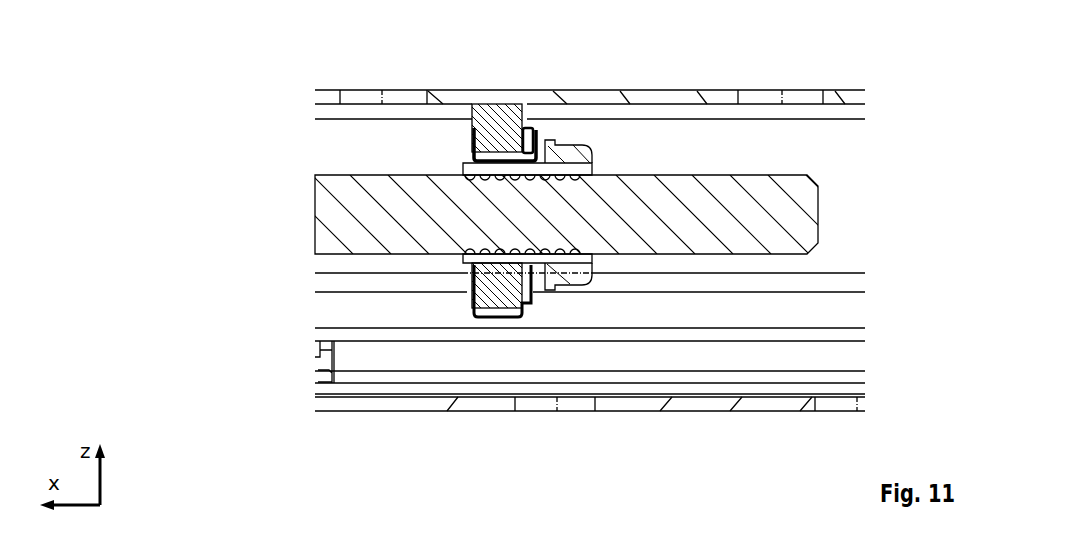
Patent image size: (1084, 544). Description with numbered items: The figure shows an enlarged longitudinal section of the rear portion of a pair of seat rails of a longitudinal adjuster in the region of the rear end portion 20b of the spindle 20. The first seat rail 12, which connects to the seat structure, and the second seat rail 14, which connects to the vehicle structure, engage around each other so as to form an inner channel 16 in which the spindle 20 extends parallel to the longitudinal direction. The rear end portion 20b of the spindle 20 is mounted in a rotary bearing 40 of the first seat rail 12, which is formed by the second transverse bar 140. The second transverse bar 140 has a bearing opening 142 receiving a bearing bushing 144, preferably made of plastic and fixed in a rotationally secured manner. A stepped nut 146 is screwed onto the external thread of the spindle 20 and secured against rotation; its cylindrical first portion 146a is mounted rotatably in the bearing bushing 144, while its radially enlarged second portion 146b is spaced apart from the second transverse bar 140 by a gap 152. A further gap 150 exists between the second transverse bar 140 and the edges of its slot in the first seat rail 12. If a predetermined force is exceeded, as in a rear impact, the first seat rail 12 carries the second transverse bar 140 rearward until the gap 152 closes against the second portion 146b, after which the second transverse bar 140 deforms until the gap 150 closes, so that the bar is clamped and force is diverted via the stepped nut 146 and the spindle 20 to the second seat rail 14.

The first seat rail 12 is at (333, 97).
The inner channel 16 is at (333, 143).
The spindle 20 is at (525, 206).
The rear end portion 20b is at (337, 213).
The second seat rail 14 is at (335, 404).
The rotary bearing 40 is at (502, 362).
The second transverse bar 140 is at (500, 128).
The bearing opening 142 is at (502, 152).
The bearing bushing 144 is at (505, 267).
The stepped nut 146 is at (580, 155).
The first portion 146a is at (512, 255).
The second portion 146b is at (575, 273).
The gap 150 is at (468, 140).
The gap 152 is at (540, 157).